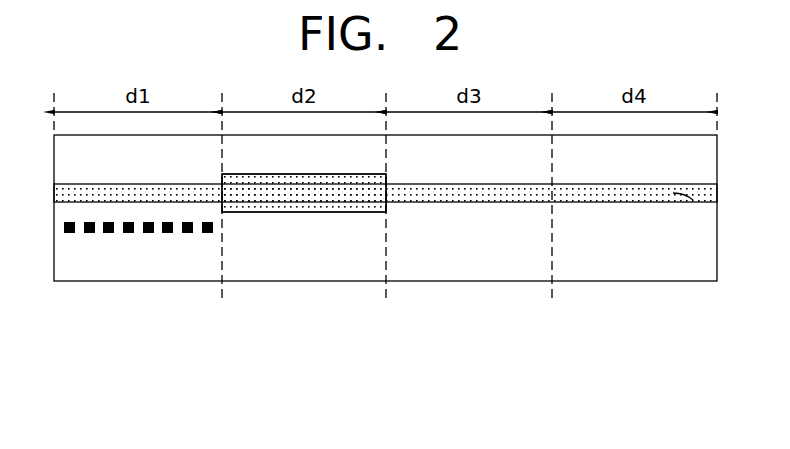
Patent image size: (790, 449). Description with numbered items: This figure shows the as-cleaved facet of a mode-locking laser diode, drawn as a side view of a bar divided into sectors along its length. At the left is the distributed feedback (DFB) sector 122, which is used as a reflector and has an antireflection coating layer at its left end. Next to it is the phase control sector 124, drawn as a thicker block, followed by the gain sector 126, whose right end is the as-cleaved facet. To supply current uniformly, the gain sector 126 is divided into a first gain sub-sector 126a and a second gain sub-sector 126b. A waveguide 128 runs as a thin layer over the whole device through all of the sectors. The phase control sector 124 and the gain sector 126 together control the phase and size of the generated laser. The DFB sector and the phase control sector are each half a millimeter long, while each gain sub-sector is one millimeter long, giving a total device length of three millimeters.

The distributed feedback (DFB) sector 122 is at (143, 285).
The phase control sector 124 is at (320, 285).
The gain sector 126 is at (487, 372).
The first gain sub-sector 126a is at (482, 285).
The second gain sub-sector 126b is at (633, 285).
The waveguide 128 is at (673, 193).